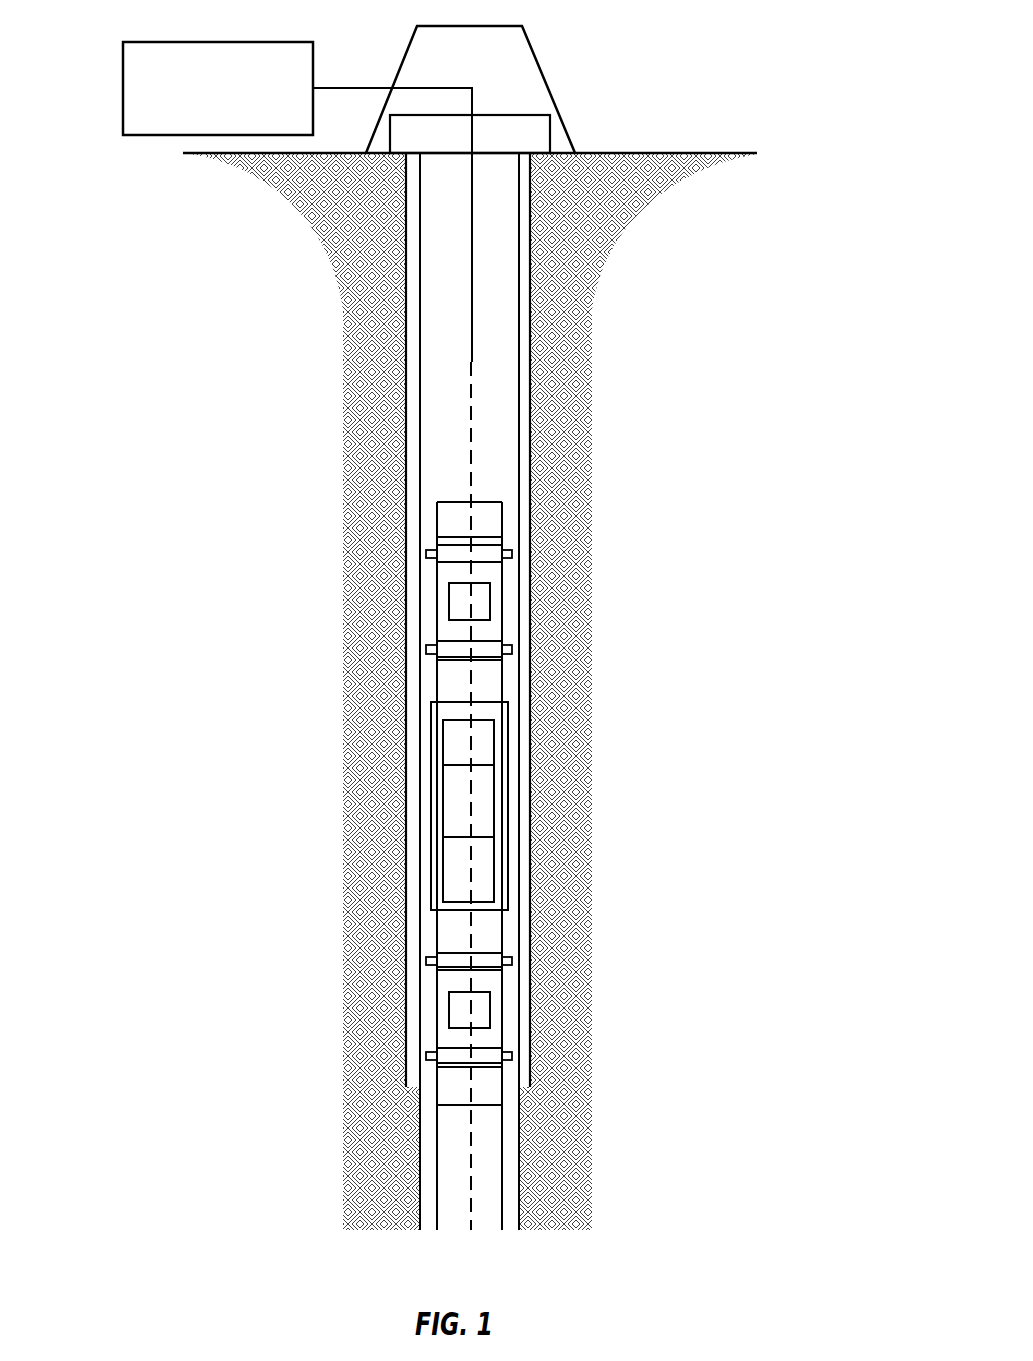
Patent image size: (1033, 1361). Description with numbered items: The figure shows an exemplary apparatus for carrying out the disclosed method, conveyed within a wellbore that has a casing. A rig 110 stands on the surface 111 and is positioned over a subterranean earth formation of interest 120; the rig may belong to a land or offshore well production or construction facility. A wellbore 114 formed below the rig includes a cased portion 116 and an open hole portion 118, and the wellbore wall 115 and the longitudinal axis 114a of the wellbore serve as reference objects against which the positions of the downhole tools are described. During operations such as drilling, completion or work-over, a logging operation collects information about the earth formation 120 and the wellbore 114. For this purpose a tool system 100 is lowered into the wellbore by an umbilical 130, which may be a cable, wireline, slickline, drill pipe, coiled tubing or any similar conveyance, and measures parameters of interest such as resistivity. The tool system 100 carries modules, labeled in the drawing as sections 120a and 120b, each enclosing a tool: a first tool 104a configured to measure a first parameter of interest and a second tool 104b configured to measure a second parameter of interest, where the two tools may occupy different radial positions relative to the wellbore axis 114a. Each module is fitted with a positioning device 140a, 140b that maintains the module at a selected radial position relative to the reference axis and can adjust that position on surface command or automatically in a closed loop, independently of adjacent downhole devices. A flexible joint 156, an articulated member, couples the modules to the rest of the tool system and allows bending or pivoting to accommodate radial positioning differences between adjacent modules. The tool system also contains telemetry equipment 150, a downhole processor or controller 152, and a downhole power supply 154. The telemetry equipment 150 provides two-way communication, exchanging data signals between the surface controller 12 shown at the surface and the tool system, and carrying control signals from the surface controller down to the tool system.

The surface controller 12 is at (160, 42).
The rig 110 is at (546, 40).
The surface 111 is at (683, 153).
The cased portion 116 is at (530, 293).
The umbilical 130 is at (472, 362).
The tool system 100 is at (691, 600).
The subterranean earth formation of interest 120 is at (190, 782).
The first tool section 120a is at (507, 606).
The second tool section 120b is at (507, 1024).
The positioning device 140a is at (426, 553).
The positioning device 140b is at (426, 958).
The first tool 104a is at (457, 598).
The second tool 104b is at (457, 1008).
The flexible joint 156 is at (495, 682).
The wellbore 114 is at (420, 730).
The wellbore wall 115 is at (420, 797).
The telemetry equipment 150 is at (487, 743).
The downhole processor or controller 152 is at (487, 798).
The downhole power supply 154 is at (487, 878).
The open hole portion 118 is at (520, 1140).
The longitudinal axis of the wellbore 114a is at (457, 1172).